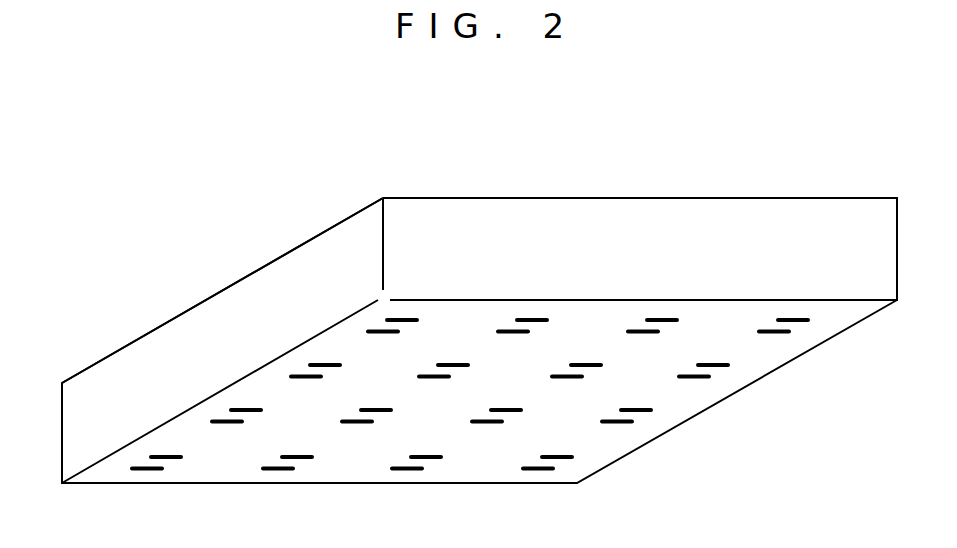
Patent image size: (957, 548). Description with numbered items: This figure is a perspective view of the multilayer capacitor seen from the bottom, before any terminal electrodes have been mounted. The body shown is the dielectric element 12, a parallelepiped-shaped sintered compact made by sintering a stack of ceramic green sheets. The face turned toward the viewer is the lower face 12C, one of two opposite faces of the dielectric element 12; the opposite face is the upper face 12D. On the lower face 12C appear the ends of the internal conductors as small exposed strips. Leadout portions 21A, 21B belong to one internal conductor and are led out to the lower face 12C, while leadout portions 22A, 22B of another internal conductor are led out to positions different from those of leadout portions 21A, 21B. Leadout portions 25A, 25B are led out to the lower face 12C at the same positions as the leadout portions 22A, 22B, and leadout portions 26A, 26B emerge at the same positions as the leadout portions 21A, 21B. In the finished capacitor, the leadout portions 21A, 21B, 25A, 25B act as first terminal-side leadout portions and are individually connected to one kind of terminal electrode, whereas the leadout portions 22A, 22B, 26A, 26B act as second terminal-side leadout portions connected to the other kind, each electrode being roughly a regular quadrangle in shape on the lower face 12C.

The dielectric element 12 is at (668, 199).
The lower face 12C is at (115, 470).
The upper face 12D is at (297, 247).
The leadout portion 21A is at (777, 333).
The leadout portion 21B is at (520, 333).
The leadout portion 22A is at (650, 333).
The leadout portion 22B is at (390, 333).
The leadout portion 25A is at (574, 378).
The leadout portion 25B is at (313, 378).
The leadout portion 26A is at (697, 378).
The leadout portion 26B is at (441, 378).